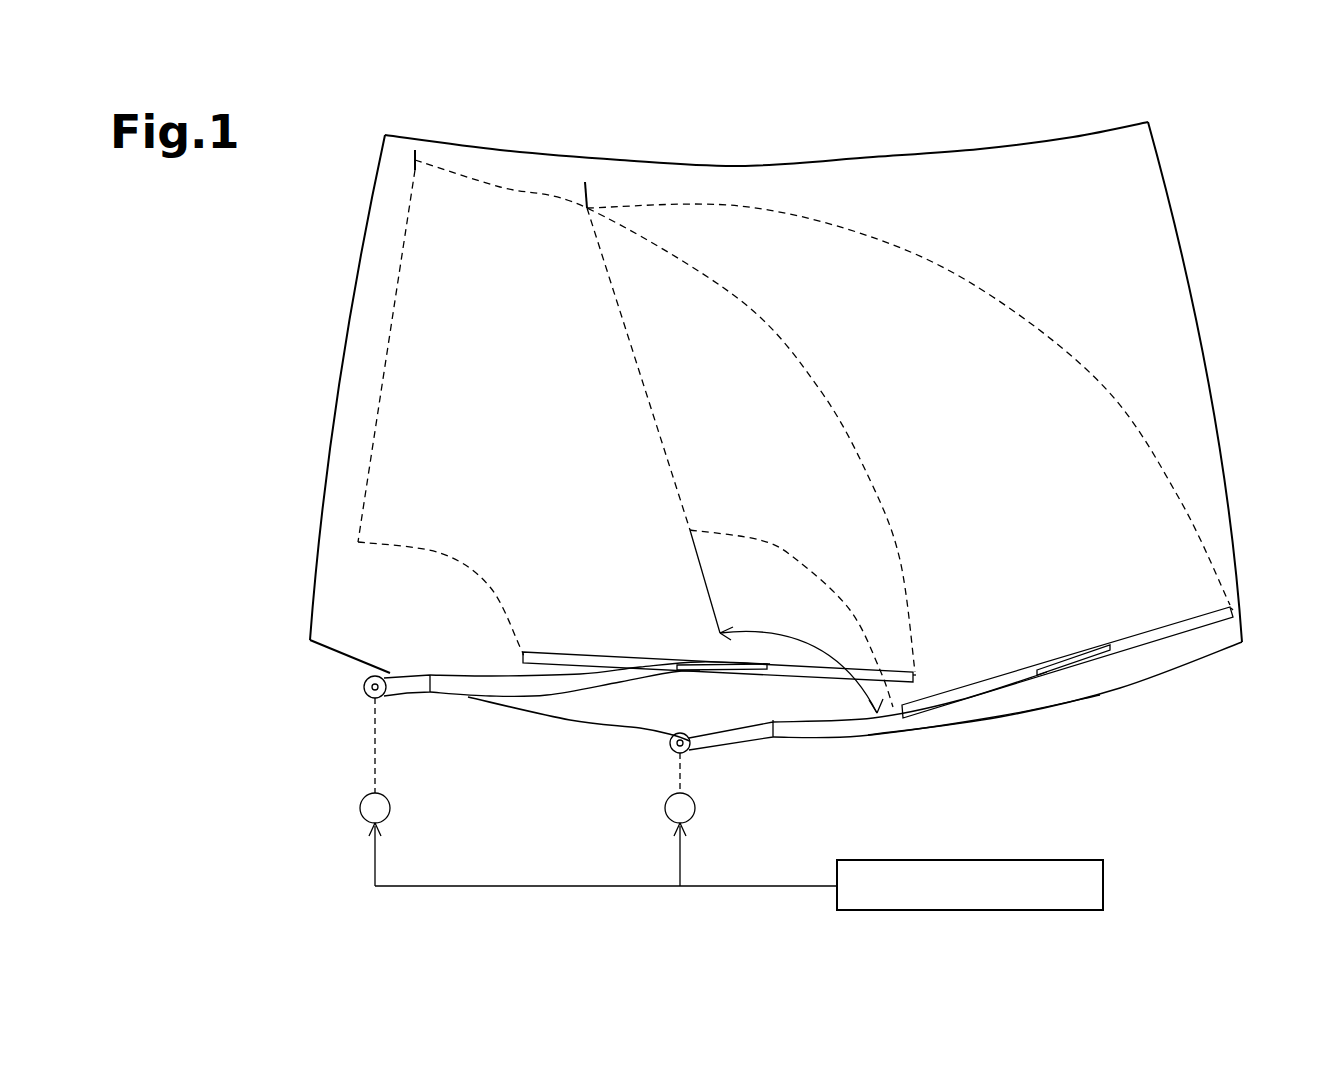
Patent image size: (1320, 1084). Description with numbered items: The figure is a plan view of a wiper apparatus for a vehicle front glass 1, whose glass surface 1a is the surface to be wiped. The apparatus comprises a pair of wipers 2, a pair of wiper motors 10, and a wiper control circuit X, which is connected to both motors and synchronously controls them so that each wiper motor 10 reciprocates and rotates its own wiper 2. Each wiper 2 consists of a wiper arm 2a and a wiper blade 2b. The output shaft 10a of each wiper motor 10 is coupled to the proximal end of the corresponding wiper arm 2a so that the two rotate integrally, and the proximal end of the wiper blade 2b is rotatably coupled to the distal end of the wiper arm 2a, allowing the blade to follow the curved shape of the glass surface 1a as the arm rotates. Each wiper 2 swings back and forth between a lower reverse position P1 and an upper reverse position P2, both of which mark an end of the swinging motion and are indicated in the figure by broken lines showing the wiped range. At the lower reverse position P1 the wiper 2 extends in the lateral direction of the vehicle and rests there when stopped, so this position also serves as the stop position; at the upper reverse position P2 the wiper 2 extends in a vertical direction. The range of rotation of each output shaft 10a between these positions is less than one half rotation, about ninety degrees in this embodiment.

The vehicle front glass 1 is at (980, 150).
The glass surface 1a is at (987, 318).
The wiper 2 is at (798, 692).
The wiper arm 2a is at (493, 675).
The wiper blade 2b is at (517, 598).
The wiper motor 10 is at (390, 808).
The output shaft 10a is at (378, 746).
The lower reverse position P1 is at (920, 677).
The upper reverse position P2 is at (416, 150).
The wiper control circuit X is at (1063, 860).